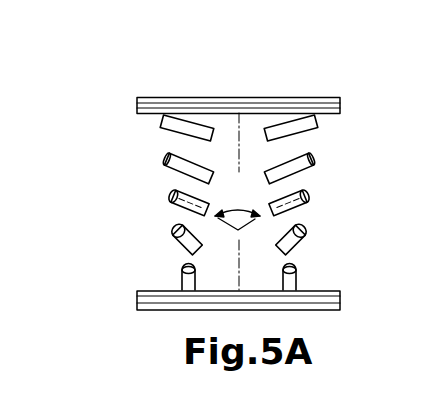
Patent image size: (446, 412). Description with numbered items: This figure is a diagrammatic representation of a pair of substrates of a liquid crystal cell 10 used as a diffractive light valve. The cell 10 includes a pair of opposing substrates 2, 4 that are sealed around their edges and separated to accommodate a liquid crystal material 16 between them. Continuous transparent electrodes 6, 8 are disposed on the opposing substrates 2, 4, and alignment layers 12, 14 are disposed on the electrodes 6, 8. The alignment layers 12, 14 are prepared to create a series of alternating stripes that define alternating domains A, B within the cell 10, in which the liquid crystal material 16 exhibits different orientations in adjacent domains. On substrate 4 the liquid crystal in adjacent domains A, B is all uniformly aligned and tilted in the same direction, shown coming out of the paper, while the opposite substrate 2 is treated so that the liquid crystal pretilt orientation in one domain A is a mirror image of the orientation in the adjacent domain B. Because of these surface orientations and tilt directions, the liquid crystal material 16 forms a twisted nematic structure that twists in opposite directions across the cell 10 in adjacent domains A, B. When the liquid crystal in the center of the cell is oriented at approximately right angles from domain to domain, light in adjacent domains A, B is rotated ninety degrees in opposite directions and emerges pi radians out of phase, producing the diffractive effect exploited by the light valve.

The cell 10 is at (313, 83).
The substrate 2 is at (154, 105).
The transparent electrode 8 is at (137, 101).
The alignment layer 12 is at (152, 113).
The alignment layer 14 is at (328, 292).
The transparent electrode 6 is at (340, 300).
The substrate 4 is at (317, 308).
The liquid crystal material 16 is at (302, 130).
The domain A is at (225, 125).
The domain B is at (254, 125).